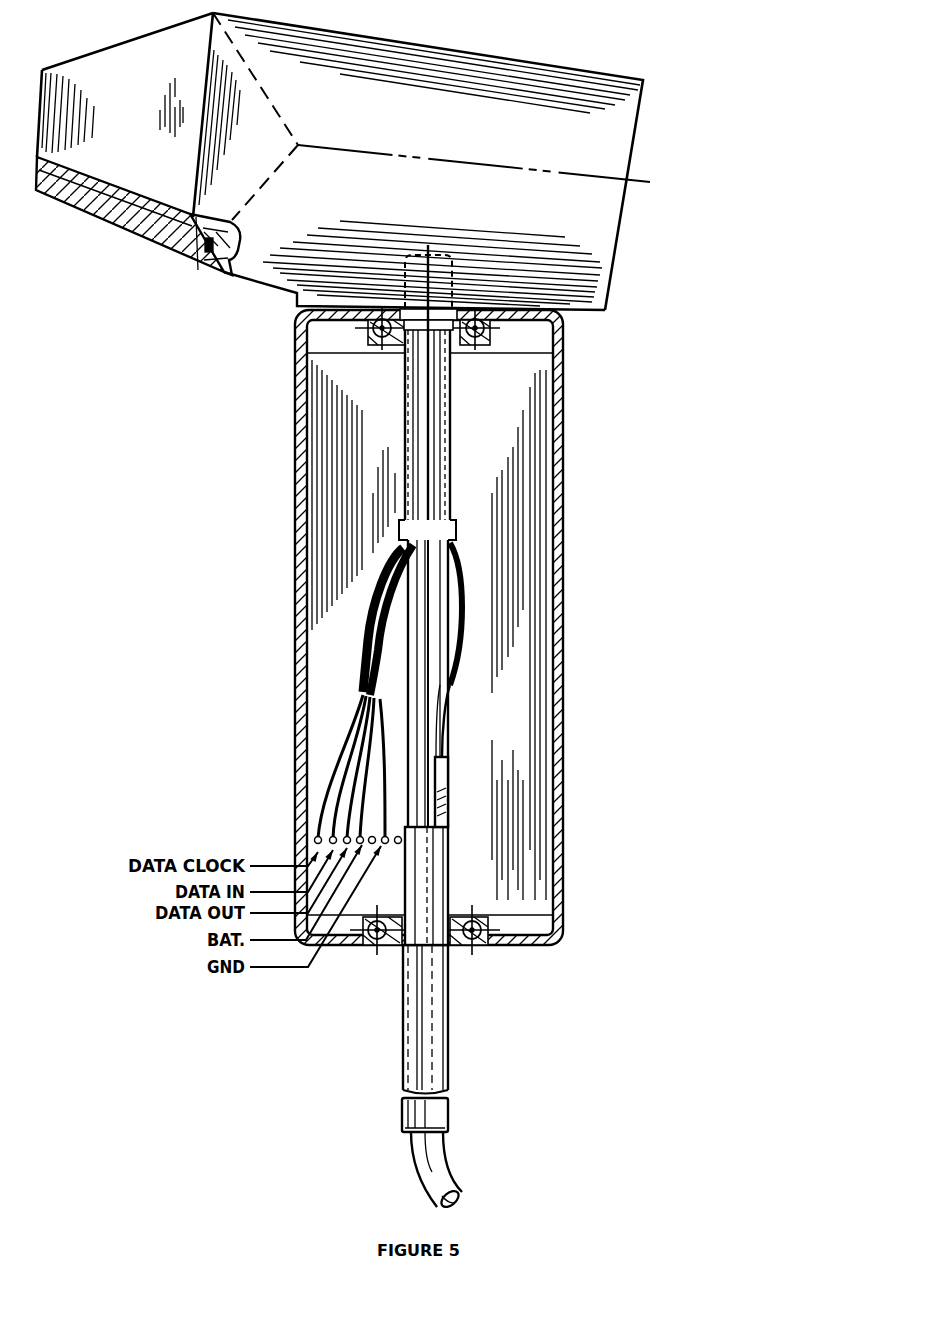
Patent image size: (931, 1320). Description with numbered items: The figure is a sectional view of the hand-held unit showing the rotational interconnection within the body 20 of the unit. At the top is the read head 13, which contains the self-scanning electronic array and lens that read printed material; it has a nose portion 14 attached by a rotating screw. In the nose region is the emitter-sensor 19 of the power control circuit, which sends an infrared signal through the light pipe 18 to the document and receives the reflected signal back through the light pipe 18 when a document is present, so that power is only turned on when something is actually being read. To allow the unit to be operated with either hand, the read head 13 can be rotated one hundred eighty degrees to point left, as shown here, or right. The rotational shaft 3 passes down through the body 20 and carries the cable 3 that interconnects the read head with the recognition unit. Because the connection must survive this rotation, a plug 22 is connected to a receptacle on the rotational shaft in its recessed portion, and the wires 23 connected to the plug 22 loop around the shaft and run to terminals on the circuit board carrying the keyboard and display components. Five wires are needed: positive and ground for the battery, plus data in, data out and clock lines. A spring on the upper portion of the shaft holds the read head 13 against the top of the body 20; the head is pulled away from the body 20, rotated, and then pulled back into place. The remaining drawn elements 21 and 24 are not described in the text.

The cable 3 is at (450, 1163).
The read head 13 is at (537, 62).
The nose portion 14 is at (125, 40).
The light pipe 18 is at (83, 188).
The emitter-sensor 19 is at (218, 258).
The body 20 is at (563, 527).
The wire bundle 21 is at (433, 658).
The plug 22 is at (448, 814).
The wires 23 is at (442, 736).
The tubular conduit 24 is at (450, 402).